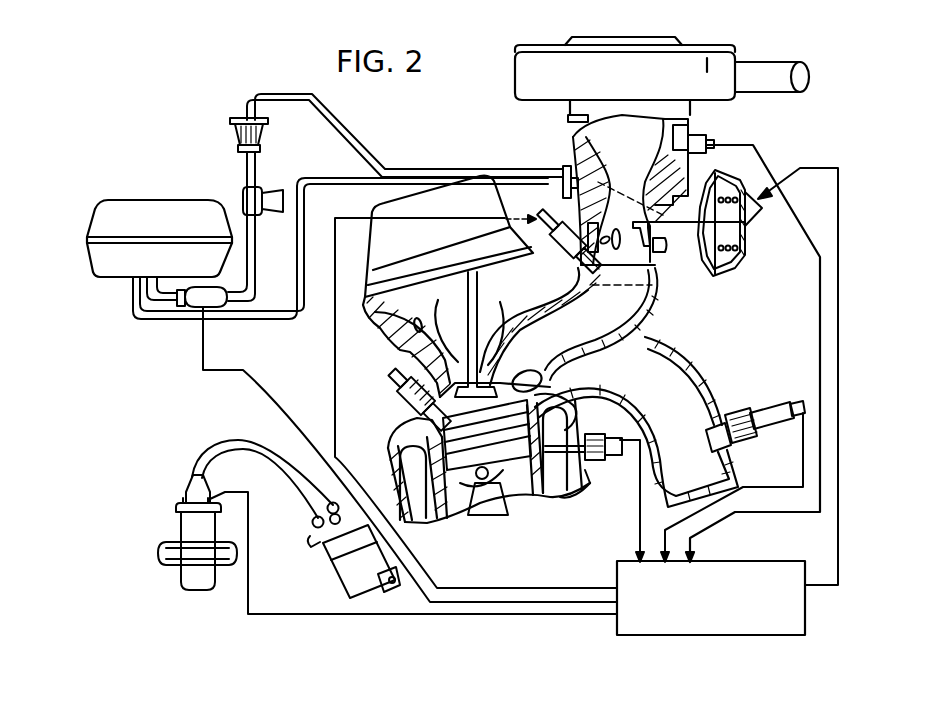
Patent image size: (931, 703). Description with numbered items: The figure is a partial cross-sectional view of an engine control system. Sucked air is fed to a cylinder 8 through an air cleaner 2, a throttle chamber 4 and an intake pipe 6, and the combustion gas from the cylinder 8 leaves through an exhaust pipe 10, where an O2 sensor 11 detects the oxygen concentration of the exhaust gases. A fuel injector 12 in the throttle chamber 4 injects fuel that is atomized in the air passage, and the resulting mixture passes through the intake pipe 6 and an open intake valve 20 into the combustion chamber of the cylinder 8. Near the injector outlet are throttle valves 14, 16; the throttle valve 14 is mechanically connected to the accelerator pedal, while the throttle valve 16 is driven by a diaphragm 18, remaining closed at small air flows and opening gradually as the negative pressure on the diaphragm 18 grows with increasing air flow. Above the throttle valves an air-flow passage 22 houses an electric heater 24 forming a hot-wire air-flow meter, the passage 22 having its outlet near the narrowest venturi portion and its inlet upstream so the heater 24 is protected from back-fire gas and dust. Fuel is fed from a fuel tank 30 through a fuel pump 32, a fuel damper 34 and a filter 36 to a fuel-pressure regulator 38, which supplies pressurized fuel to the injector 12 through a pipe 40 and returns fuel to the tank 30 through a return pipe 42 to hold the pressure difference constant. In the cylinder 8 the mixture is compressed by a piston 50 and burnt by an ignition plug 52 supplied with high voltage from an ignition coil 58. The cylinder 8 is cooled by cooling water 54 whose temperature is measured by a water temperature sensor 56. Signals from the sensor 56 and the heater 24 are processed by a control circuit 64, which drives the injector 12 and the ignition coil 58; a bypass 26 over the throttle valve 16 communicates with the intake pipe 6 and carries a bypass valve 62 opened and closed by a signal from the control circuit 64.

The air cleaner 2 is at (727, 50).
The throttle chamber 4 is at (573, 148).
The intake pipe 6 is at (540, 333).
The cylinder 8 is at (392, 455).
The exhaust pipe 10 is at (690, 392).
The O2 sensor 11 is at (768, 405).
The fuel injector 12 is at (569, 248).
The throttle valve 14 is at (613, 232).
The throttle valve 16 is at (641, 249).
The diaphragm 18 is at (747, 268).
The intake valve 20 is at (480, 370).
The air-flow passage 22 is at (700, 113).
The electric heater 24 is at (700, 158).
The bypass 26 is at (629, 324).
The fuel tank 30 is at (149, 200).
The fuel pump 32 is at (222, 309).
The fuel damper 34 is at (262, 212).
The filter 36 is at (265, 138).
The fuel-pressure regulator 38 is at (562, 167).
The pipe 40 is at (545, 213).
The return pipe 42 is at (329, 178).
The piston 50 is at (515, 478).
The ignition plug 52 is at (398, 399).
The cooling water 54 is at (572, 490).
The water temperature sensor 56 is at (594, 482).
The ignition coil 58 is at (165, 545).
The bypass valve 62 is at (750, 216).
The control circuit 64 is at (745, 562).